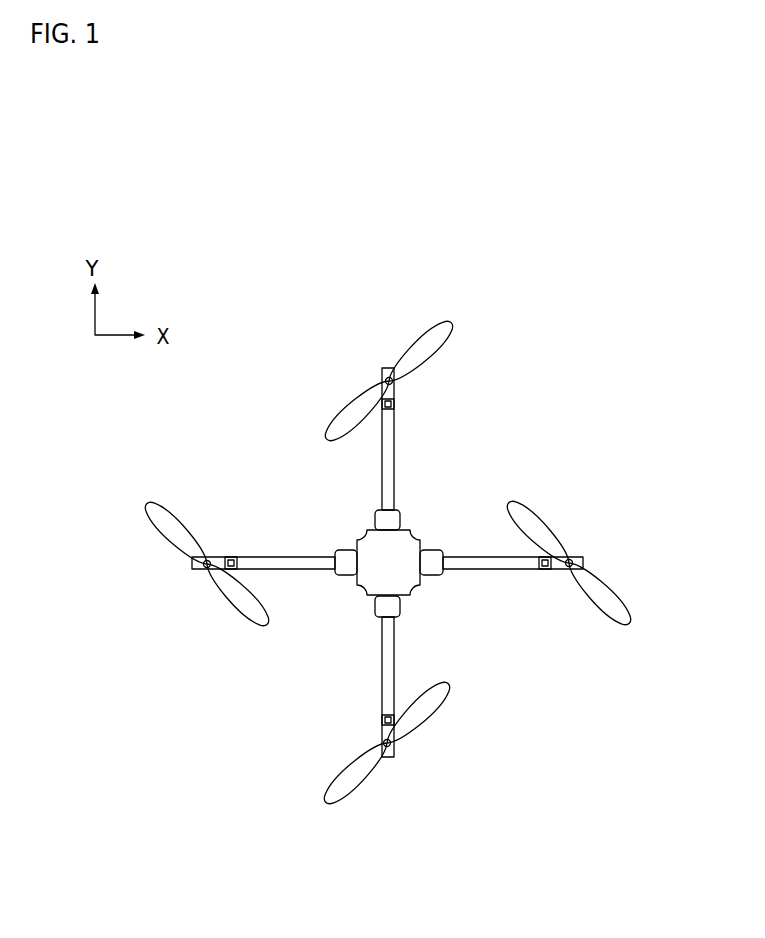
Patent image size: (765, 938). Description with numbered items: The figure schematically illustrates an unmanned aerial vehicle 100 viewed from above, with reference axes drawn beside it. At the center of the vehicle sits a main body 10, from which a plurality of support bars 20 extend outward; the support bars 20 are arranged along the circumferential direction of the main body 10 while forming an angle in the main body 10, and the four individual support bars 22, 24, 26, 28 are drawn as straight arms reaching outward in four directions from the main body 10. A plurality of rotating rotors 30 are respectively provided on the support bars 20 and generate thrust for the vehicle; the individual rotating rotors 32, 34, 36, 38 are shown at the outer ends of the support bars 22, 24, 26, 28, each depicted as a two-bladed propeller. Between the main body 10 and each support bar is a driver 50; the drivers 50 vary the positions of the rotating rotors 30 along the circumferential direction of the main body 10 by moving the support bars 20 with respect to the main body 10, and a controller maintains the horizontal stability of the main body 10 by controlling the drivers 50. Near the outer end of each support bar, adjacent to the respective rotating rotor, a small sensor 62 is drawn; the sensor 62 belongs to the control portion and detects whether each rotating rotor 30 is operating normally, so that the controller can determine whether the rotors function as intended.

The unmanned aerial vehicle 100 is at (363, 260).
The main body 10 is at (396, 557).
The support bars 20 is at (429, 589).
The support bar 22 is at (260, 557).
The support bar 24 is at (394, 435).
The support bar 26 is at (383, 680).
The support bar 28 is at (495, 569).
The rotating rotors 30 is at (365, 562).
The rotating rotor 32 is at (153, 513).
The rotating rotor 34 is at (352, 412).
The rotating rotor 36 is at (435, 708).
The rotating rotor 38 is at (532, 520).
The driver 50 is at (403, 508).
The sensor 62 is at (395, 405).